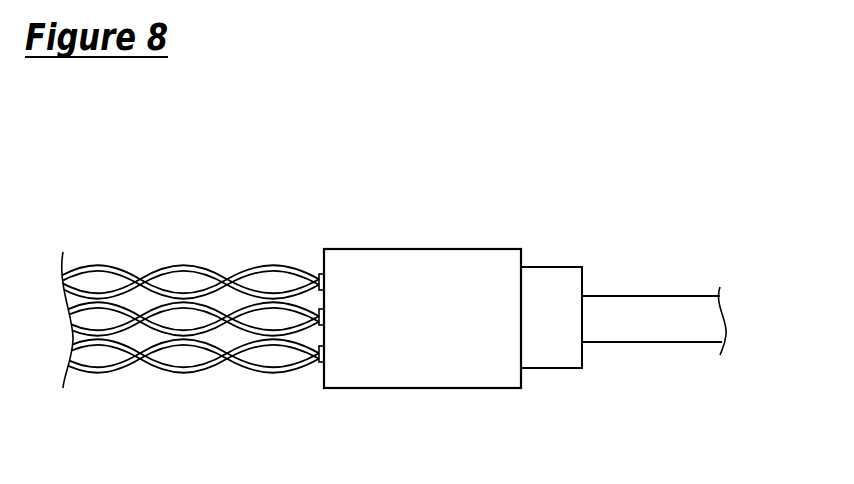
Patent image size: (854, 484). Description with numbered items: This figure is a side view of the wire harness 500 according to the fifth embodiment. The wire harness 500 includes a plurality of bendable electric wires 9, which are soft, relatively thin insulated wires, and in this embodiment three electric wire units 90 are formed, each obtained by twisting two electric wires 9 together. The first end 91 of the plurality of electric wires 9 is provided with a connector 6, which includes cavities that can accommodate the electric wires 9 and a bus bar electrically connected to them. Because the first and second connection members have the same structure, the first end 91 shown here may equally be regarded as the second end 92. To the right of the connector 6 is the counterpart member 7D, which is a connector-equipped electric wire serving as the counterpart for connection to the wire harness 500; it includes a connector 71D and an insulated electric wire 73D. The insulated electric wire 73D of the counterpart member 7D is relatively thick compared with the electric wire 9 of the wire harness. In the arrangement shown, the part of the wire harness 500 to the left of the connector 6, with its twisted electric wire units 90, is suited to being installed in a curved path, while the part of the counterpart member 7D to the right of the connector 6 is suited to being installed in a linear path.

The wire harness 500 is at (643, 138).
The connector 6 is at (508, 244).
The counterpart member 7D is at (687, 252).
The connector 71D is at (550, 368).
The insulated electric wire 73D is at (643, 343).
The electric wire 9 is at (185, 295).
The electric wire unit 90 is at (139, 290).
The first end 91 is at (300, 369).
The second end 92 is at (187, 356).